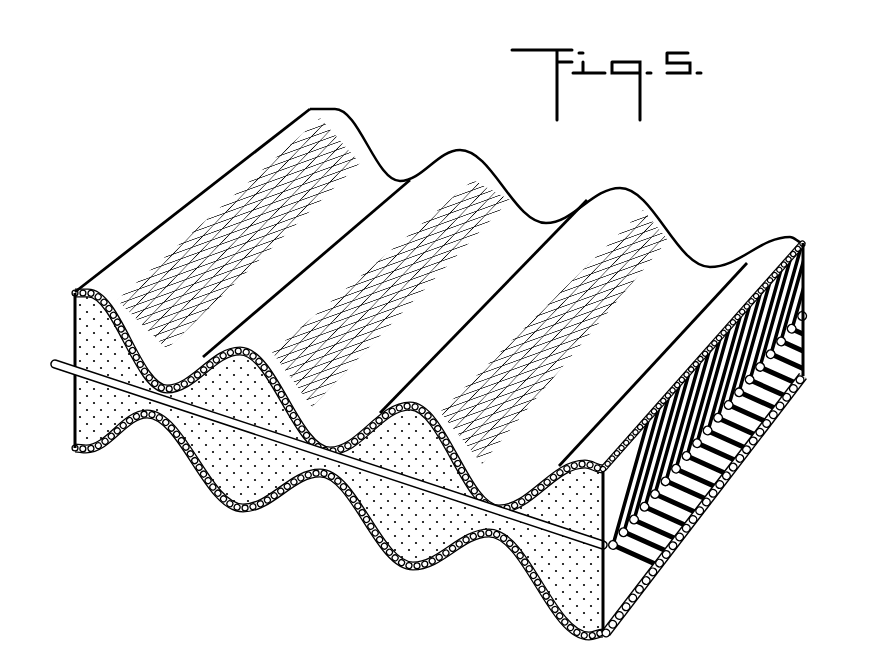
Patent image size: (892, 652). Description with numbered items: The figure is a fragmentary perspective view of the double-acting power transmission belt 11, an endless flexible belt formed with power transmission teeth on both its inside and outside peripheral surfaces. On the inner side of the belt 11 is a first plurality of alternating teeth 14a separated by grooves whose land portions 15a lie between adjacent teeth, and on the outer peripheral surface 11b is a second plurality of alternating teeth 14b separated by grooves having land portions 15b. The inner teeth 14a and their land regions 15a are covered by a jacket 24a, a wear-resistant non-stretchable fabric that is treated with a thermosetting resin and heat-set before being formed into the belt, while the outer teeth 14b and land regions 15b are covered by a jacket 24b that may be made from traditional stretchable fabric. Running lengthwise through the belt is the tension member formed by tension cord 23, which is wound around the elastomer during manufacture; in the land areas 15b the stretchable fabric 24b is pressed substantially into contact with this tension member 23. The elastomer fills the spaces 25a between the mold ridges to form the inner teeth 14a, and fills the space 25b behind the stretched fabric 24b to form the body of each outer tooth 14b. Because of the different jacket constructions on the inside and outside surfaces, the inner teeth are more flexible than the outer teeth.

The double-acting power transmission belt 11 is at (150, 472).
The outer peripheral surface 11b is at (316, 102).
The teeth 14a is at (248, 511).
The teeth 14b is at (636, 191).
The land portions 15a is at (493, 548).
The land portions 15b is at (713, 266).
The tension cord 23 is at (56, 371).
The jacket 24a is at (80, 458).
The jacket 24b is at (78, 291).
The spaces 25a is at (400, 538).
The space 25b is at (420, 468).